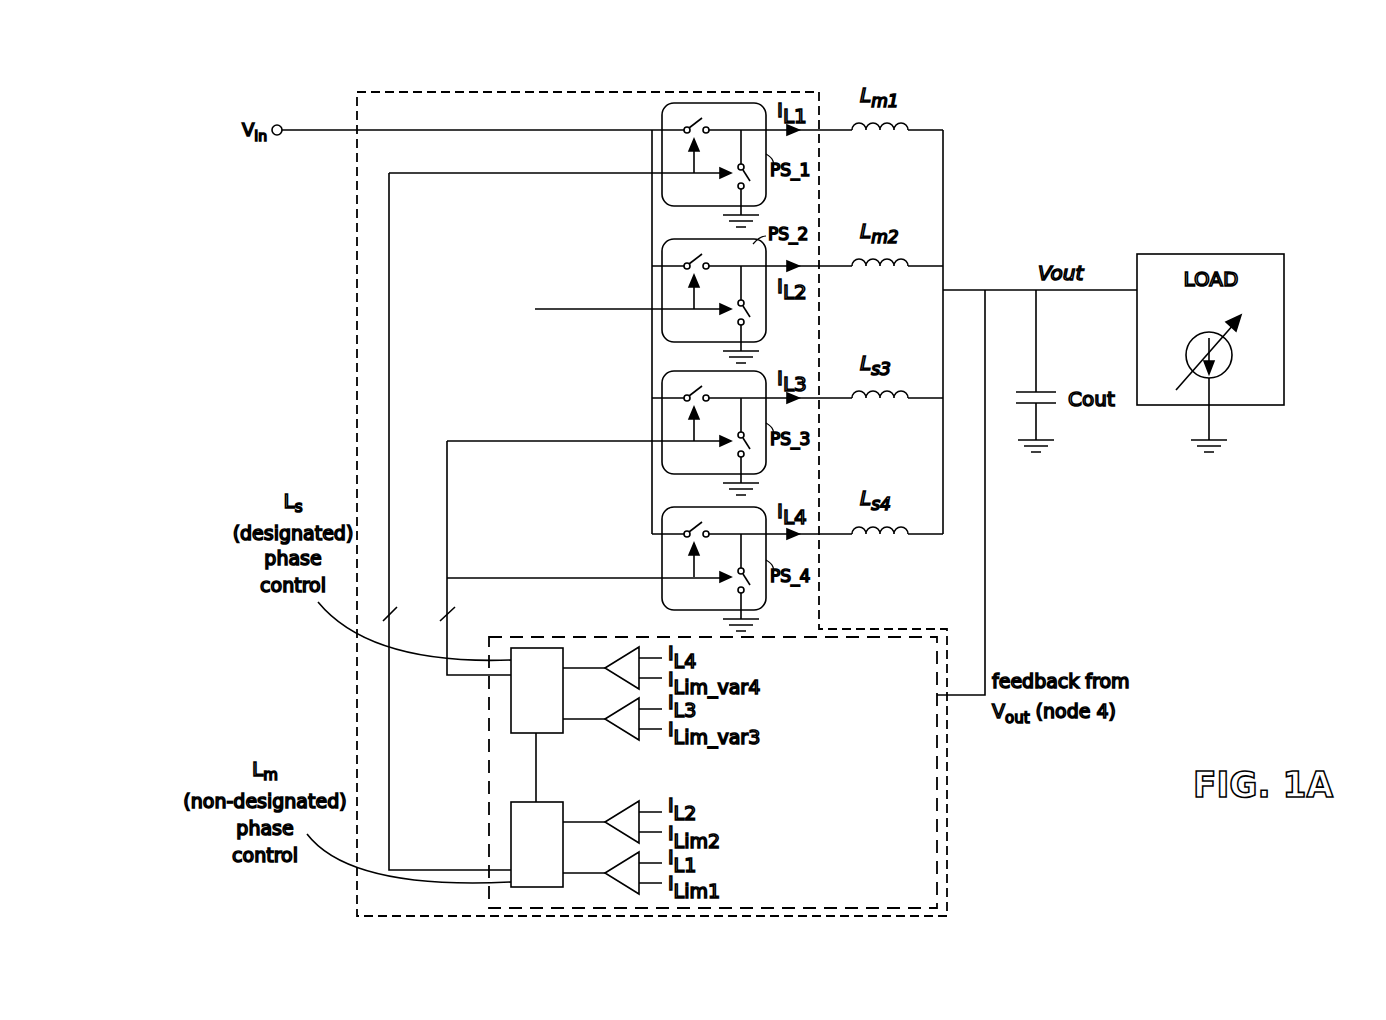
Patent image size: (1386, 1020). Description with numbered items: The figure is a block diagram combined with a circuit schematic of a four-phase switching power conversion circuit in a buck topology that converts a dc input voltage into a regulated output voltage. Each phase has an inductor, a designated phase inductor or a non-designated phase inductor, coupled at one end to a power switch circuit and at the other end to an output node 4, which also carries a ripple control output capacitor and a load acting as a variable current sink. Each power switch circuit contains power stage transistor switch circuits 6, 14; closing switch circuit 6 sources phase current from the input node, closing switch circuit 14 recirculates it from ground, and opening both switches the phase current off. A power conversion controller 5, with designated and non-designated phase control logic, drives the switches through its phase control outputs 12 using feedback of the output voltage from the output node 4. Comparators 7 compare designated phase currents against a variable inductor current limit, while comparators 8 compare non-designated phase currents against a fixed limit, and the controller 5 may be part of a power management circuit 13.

The output node 4 is at (966, 284).
The power conversion controller 5 is at (489, 698).
The power stage transistor switch circuit 6 is at (689, 124).
The comparator 7 is at (609, 662).
The comparator 8 is at (609, 817).
The phase control outputs 12 is at (440, 613).
The power management circuit 13 is at (937, 868).
The power stage transistor switch circuit 14 is at (758, 174).